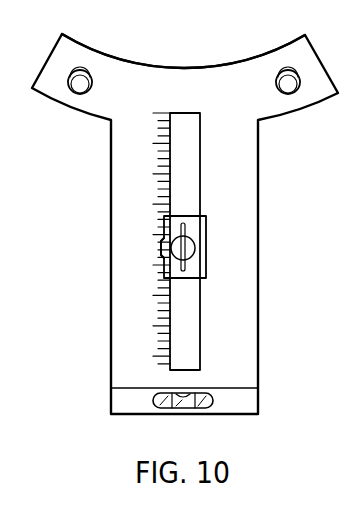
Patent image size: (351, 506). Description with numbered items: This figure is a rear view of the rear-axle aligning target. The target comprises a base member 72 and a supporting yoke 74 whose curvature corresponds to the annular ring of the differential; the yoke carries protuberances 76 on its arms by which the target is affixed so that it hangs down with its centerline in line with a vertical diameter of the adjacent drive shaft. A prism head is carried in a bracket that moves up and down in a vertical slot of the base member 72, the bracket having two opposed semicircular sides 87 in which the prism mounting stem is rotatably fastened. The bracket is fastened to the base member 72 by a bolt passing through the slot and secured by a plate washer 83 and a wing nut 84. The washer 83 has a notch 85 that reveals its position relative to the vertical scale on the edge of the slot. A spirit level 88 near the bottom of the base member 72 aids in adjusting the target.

The base member 72 is at (247, 139).
The supporting yoke 74 is at (209, 72).
The protuberances 76 is at (82, 82).
The plate washer 83 is at (200, 269).
The wing nut 84 is at (190, 243).
The notch 85 is at (167, 248).
The semicircular sides 87 is at (170, 335).
The spirit level 88 is at (210, 399).